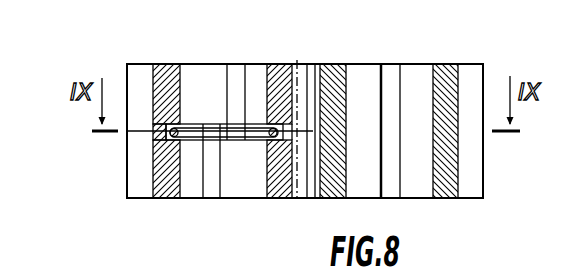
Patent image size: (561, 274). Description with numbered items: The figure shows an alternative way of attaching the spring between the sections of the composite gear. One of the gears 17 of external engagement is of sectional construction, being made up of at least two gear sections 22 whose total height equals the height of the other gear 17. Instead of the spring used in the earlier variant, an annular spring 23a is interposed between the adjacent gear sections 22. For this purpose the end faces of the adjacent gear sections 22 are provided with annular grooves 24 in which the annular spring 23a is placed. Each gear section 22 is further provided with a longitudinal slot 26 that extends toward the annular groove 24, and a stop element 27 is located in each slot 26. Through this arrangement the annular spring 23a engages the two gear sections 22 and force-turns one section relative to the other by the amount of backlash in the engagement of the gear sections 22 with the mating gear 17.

The gear of external engagement 17 is at (330, 66).
The gear section 22 is at (133, 148).
The annular spring 23a is at (187, 128).
The annular groove 24 is at (298, 65).
The longitudinal slot 26 is at (250, 85).
The stop element 27 is at (237, 80).